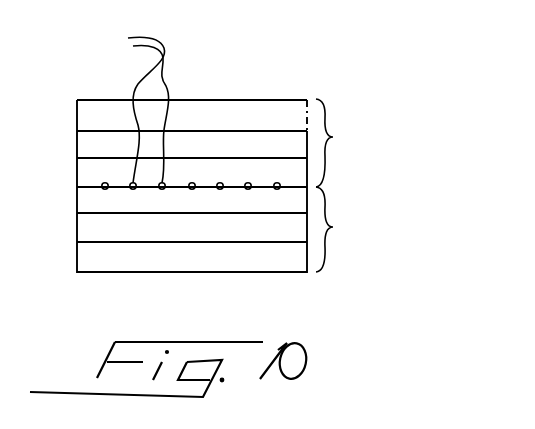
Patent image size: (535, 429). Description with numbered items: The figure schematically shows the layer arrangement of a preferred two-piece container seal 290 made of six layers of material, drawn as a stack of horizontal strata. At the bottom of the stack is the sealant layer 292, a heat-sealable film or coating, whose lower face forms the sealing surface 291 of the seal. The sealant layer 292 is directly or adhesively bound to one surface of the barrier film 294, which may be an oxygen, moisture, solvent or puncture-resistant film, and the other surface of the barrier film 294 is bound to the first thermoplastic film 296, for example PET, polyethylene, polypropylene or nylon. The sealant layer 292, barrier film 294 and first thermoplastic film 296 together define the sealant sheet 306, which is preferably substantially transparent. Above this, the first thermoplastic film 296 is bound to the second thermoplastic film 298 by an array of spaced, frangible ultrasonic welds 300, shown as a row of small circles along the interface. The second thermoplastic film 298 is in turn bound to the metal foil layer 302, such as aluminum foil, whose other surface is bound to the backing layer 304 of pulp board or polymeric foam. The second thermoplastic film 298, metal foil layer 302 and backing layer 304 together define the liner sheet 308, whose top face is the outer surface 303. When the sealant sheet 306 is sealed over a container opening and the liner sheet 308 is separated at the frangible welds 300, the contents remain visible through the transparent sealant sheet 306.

The two-piece container seal 290 is at (297, 296).
The sealing surface 291 is at (116, 277).
The sealant layer 292 is at (88, 255).
The barrier film 294 is at (88, 225).
The first thermoplastic film 296 is at (88, 198).
The second thermoplastic film 298 is at (88, 168).
The frangible ultrasonic welds 300 is at (183, 107).
The metal foil layer 302 is at (88, 142).
The outer surface 303 is at (217, 99).
The backing layer 304 is at (88, 113).
The sealant sheet 306 is at (332, 226).
The liner sheet 308 is at (337, 138).